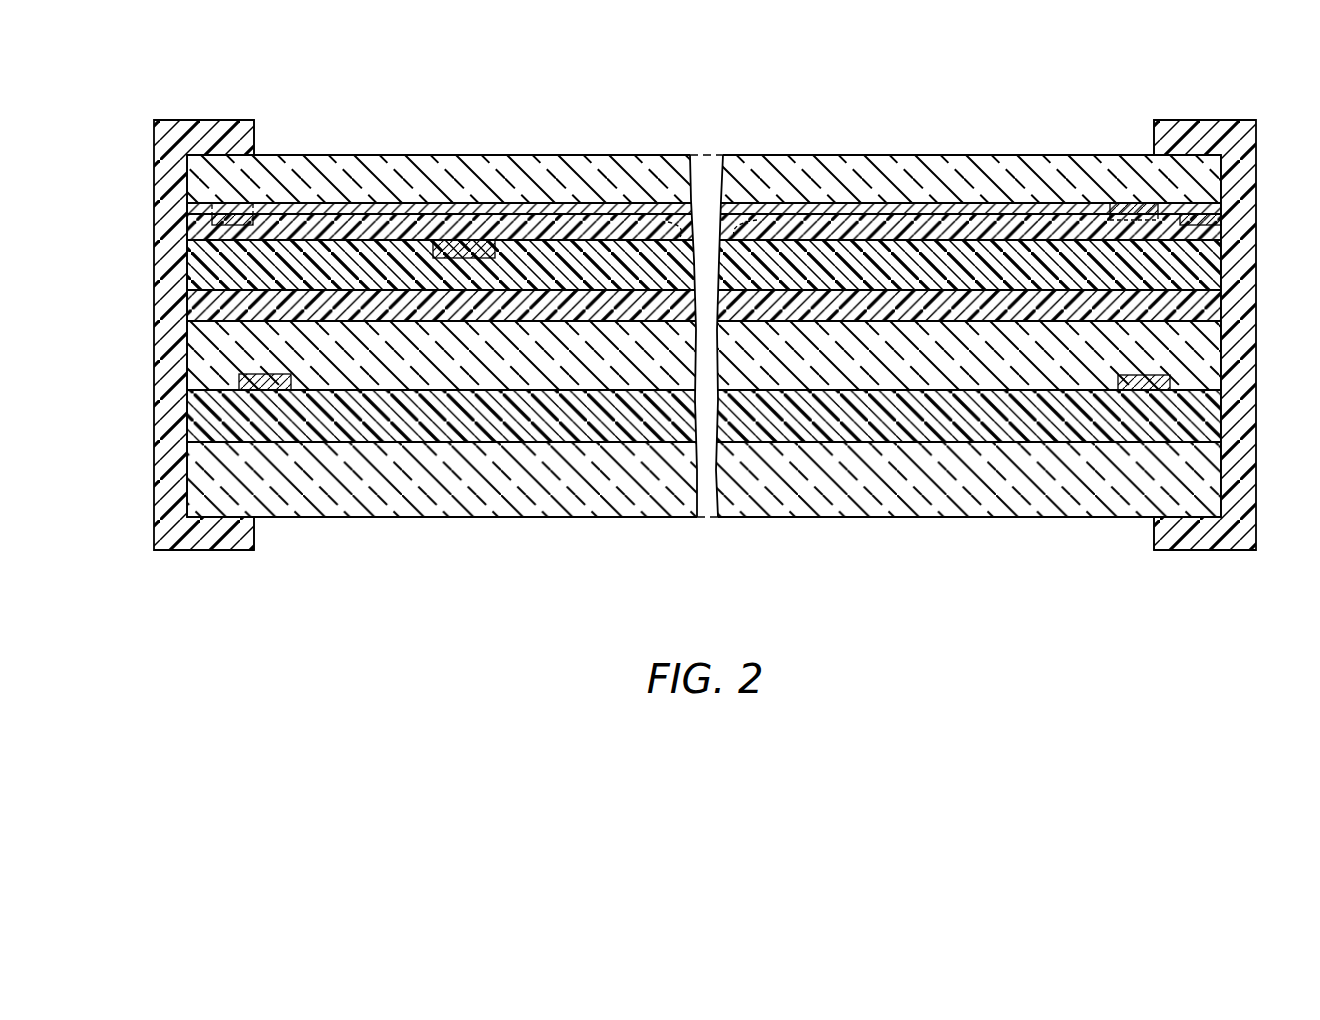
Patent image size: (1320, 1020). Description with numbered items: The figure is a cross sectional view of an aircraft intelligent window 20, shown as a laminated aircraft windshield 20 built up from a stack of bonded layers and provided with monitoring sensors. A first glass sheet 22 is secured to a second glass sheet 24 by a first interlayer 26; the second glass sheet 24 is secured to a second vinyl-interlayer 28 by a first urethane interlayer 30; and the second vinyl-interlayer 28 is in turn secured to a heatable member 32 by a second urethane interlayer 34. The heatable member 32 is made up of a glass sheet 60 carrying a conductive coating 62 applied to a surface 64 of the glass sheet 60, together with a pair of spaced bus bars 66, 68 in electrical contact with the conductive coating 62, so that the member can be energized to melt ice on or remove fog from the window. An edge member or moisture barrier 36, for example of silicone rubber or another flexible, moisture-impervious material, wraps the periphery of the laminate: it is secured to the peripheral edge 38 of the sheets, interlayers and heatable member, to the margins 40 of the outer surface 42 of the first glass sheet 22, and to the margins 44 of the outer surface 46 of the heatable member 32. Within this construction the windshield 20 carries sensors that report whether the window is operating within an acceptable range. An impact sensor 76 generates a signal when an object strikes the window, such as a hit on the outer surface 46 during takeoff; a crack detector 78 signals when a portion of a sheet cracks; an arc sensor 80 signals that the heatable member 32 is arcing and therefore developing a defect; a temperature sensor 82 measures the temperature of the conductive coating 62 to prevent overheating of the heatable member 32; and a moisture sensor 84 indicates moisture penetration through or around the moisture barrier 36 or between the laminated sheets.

The aircraft intelligent window 20 is at (323, 612).
The first glass sheet 22 is at (575, 519).
The second glass sheet 24 is at (360, 372).
The first interlayer 26 is at (618, 432).
The second vinyl-interlayer 28 is at (363, 257).
The first urethane interlayer 30 is at (430, 300).
The heatable member 32 is at (648, 155).
The second urethane interlayer 34 is at (323, 227).
The moisture barrier 36 is at (152, 412).
The peripheral edge 38 is at (155, 310).
The margins of outer surface 40 is at (207, 505).
The outer surface 42 is at (465, 519).
The margins of outer surface 44 is at (198, 168).
The outer surface 46 is at (465, 155).
The glass sheet 60 is at (518, 180).
The conductive coating 62 is at (1058, 208).
The surface 64 is at (563, 200).
The bus bar 66 is at (1143, 205).
The bus bar 68 is at (272, 202).
The impact sensor 76 is at (478, 252).
The crack detector 78 is at (240, 382).
The arc sensor 80 is at (200, 195).
The temperature sensor 82 is at (715, 217).
The moisture sensor 84 is at (250, 215).